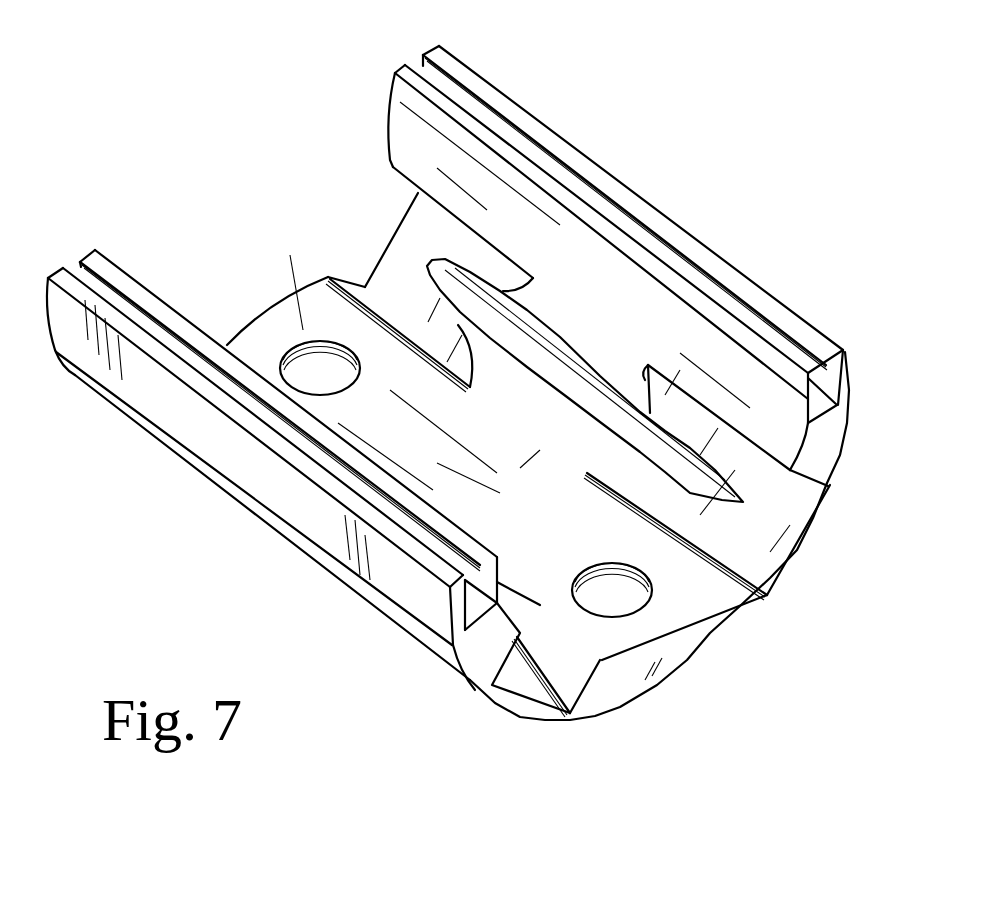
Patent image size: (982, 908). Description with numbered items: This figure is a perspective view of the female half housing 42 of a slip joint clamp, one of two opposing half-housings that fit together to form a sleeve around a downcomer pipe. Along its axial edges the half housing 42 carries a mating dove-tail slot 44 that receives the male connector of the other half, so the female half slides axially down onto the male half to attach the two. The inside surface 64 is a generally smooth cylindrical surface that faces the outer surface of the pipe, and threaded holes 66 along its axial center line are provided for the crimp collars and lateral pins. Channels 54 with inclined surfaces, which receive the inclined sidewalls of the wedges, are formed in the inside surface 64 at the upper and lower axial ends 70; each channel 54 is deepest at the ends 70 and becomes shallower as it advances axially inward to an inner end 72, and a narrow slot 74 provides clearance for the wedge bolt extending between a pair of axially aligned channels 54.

The female half-housing 42 is at (128, 528).
The dove-tail slot 44 is at (73, 263).
The channels 54 is at (400, 247).
The inside surface 64 is at (435, 458).
The threaded holes 66 is at (317, 368).
The axial ends 70 is at (243, 345).
The inner end 72 is at (508, 289).
The narrow slot 74 is at (585, 348).